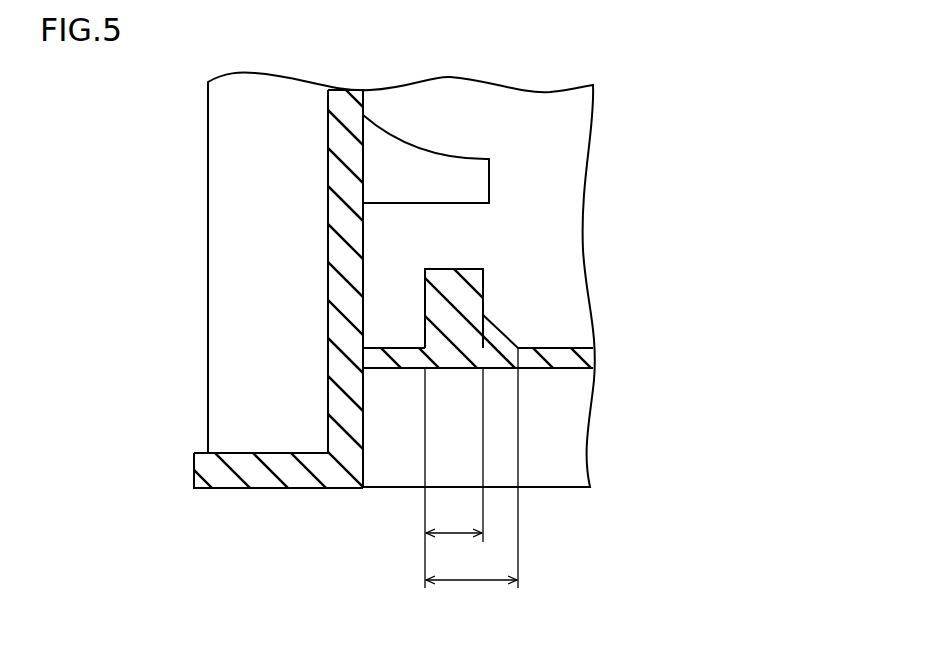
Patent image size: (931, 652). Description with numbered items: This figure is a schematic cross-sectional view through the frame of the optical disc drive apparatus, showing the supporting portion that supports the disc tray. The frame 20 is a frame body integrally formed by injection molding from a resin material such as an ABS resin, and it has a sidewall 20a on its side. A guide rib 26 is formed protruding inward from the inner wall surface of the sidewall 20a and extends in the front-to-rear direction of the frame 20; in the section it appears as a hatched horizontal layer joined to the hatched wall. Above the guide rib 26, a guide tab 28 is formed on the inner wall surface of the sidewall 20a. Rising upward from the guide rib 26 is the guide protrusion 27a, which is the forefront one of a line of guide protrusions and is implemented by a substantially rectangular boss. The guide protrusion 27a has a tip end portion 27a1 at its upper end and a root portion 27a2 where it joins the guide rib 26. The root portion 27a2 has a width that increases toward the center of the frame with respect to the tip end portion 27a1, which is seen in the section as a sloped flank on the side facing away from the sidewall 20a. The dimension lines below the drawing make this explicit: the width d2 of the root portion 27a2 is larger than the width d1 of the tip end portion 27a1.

The frame 20 is at (172, 138).
The sidewall 20a is at (345, 219).
The guide tab 28 is at (467, 182).
The guide rib 26 is at (567, 357).
The guide protrusion 27a is at (125, 273).
The tip end portion 27a1 is at (453, 292).
The root portion 27a2 is at (453, 330).
The width of tip end portion d1 is at (471, 468).
The width of root portion d2 is at (471, 567).